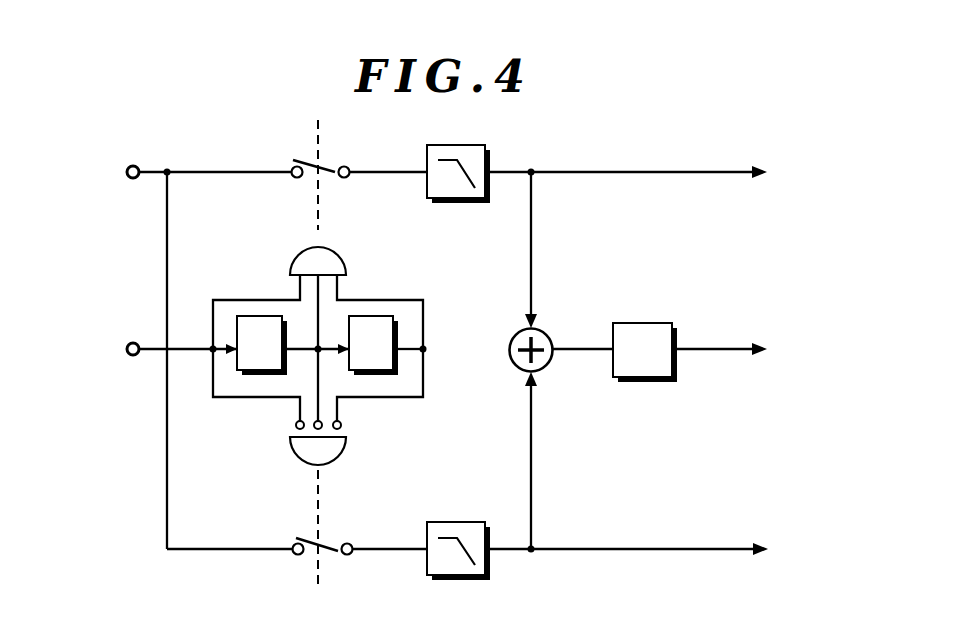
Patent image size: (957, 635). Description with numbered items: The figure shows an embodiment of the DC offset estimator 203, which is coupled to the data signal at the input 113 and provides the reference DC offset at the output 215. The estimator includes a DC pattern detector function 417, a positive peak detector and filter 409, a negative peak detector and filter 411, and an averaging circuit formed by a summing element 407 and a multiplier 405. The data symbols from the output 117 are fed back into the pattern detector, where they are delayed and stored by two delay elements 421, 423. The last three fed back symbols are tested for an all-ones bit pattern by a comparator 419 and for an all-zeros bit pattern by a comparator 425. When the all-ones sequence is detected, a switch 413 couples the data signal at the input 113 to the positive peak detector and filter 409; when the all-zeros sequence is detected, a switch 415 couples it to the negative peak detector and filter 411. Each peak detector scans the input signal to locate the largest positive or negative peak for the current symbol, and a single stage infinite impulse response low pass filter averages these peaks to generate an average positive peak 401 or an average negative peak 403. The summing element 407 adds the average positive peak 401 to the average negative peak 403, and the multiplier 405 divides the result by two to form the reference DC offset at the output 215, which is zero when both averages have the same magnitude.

The input 113 is at (153, 167).
The output 117 is at (153, 345).
The DC offset estimator 203 is at (664, 118).
The output 215 is at (722, 349).
The average positive peak 401 is at (720, 172).
The average negative peak 403 is at (720, 549).
The multiplier 405 is at (643, 322).
The summing element 407 is at (538, 323).
The positive peak detector and filter 409 is at (465, 144).
The negative peak detector and filter 411 is at (458, 521).
The switch 413 is at (323, 166).
The switch 415 is at (327, 545).
The DC pattern detector function 417 is at (200, 415).
The comparator 419 is at (338, 256).
The delay element 421 is at (383, 315).
The delay element 423 is at (258, 315).
The comparator 425 is at (345, 452).